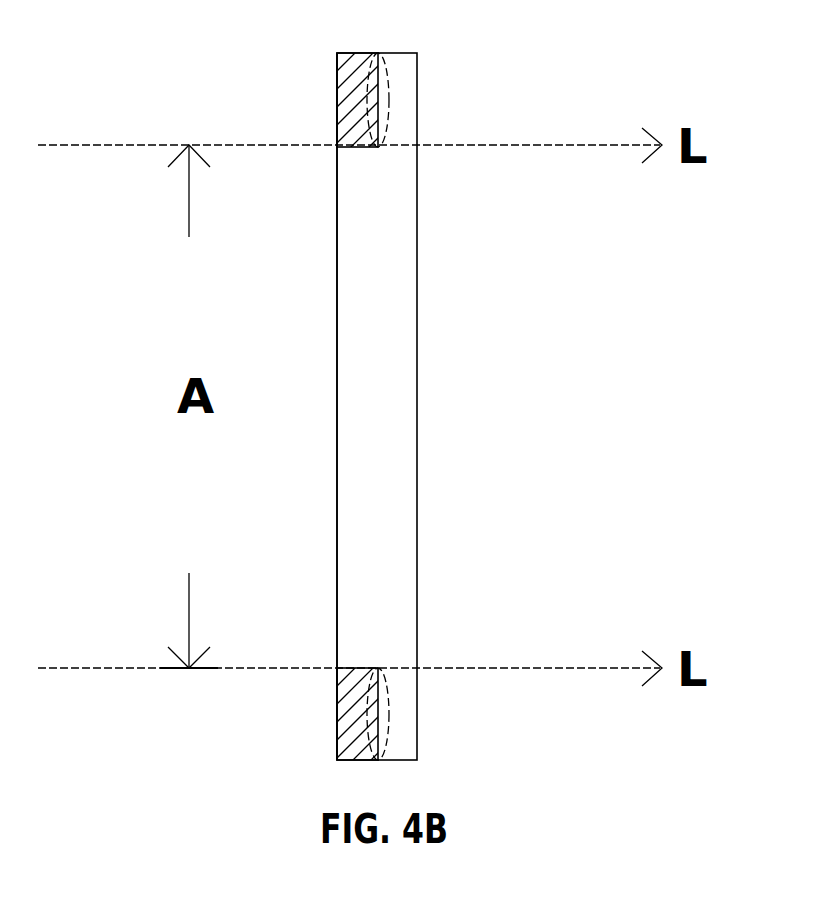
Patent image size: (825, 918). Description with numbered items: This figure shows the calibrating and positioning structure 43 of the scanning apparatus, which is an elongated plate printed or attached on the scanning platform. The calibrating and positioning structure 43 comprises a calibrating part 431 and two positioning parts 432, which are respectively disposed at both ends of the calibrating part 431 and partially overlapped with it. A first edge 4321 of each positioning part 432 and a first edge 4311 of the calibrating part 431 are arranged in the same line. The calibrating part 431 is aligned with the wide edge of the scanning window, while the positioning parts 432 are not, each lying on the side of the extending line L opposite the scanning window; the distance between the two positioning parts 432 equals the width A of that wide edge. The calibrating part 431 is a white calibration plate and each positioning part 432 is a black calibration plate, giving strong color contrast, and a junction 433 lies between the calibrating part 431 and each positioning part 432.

The calibrating and positioning structure 43 is at (792, 57).
The calibrating part 431 is at (387, 317).
The first edge of the calibrating part 4311 is at (337, 402).
The positioning part 432 is at (353, 105).
The first edge of the positioning part 4321 is at (337, 112).
The junction 433 is at (389, 100).